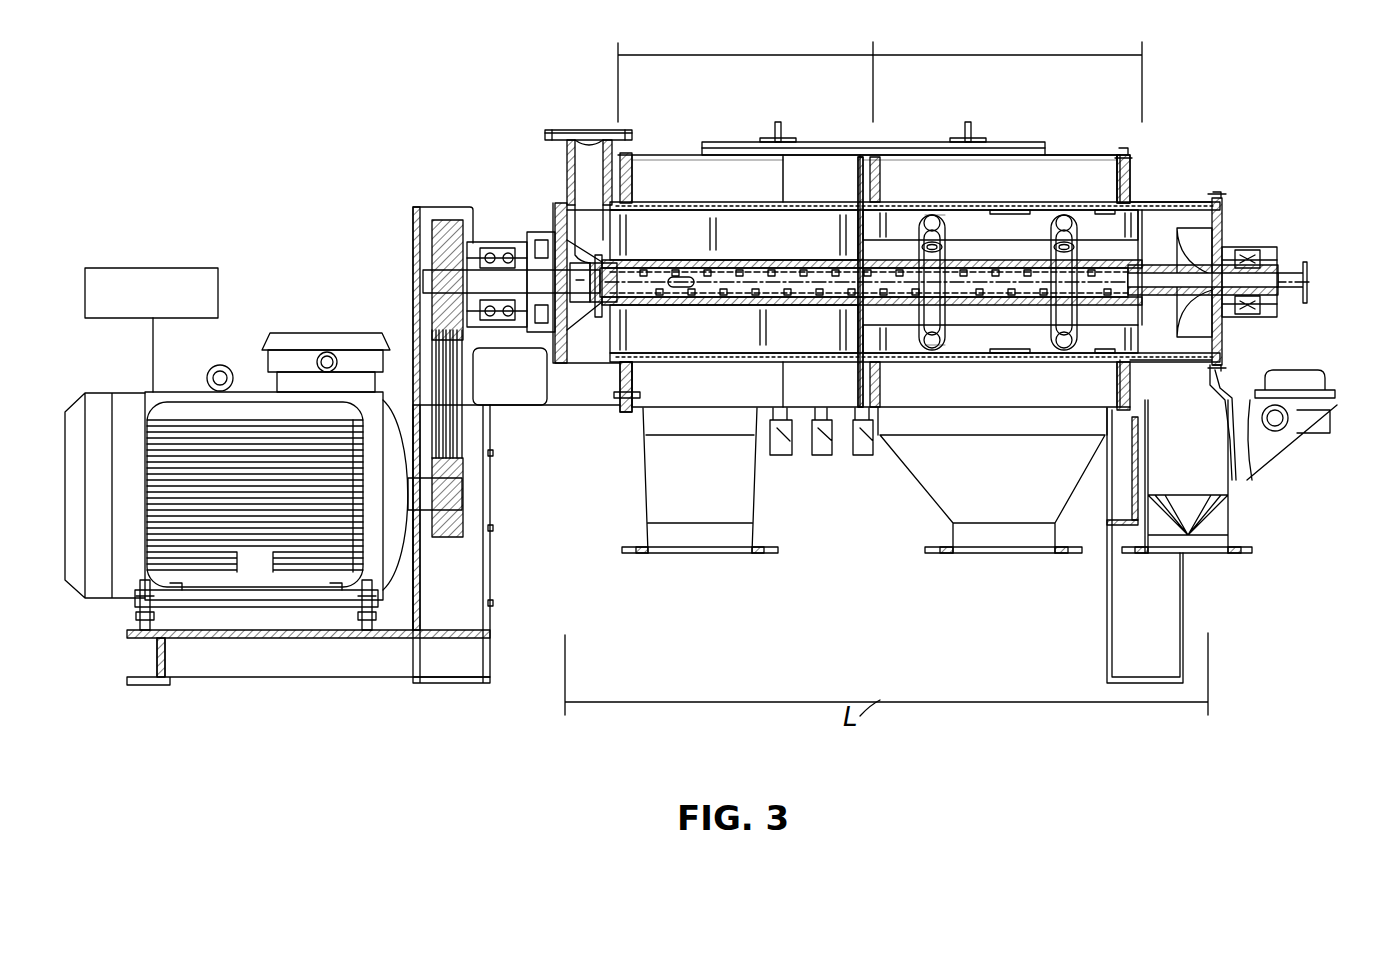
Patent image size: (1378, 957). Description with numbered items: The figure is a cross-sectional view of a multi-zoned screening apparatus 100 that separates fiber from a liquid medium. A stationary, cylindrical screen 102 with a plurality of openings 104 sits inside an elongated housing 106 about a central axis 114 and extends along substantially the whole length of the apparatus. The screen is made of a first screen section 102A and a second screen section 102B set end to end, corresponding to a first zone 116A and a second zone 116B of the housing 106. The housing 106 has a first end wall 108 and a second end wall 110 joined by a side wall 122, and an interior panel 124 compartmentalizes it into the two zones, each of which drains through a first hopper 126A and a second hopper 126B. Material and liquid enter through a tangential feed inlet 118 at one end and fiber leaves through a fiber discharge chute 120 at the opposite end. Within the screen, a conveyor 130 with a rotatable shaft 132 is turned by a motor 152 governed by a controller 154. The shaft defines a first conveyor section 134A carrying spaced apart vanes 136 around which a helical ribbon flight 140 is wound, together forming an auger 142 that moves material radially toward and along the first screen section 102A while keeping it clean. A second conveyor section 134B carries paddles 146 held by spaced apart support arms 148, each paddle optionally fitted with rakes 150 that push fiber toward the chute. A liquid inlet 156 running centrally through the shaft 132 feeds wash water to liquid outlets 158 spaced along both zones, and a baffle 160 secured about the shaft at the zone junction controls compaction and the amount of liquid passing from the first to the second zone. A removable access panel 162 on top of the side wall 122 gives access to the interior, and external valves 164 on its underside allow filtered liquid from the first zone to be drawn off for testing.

The apparatus 100 is at (340, 105).
The screen 102 is at (1079, 193).
The first screen section 102A is at (727, 205).
The second screen section 102B is at (1018, 205).
The openings 104 is at (832, 202).
The housing 106 is at (671, 146).
The first end wall 108 is at (618, 386).
The second end wall 110 is at (1130, 186).
The central axis 114 is at (1286, 275).
The first zone 116A is at (747, 55).
The second zone 116B is at (1014, 55).
The tangential feed inlet 118 is at (590, 135).
The fiber discharge chute 120 is at (1163, 550).
The side wall 122 is at (1060, 155).
The interior panel 124 is at (870, 175).
The first hopper 126A is at (704, 550).
The second hopper 126B is at (1003, 550).
The conveyor 130 is at (1152, 250).
The rotatable shaft 132 is at (686, 300).
The first conveyor section 134A is at (673, 262).
The second conveyor section 134B is at (920, 302).
The vanes 136 is at (772, 244).
The ribbon flight 140 is at (738, 362).
The auger 142 is at (694, 367).
The paddles 146 is at (956, 214).
The support arms 148 is at (1052, 255).
The rakes 150 is at (1032, 358).
The motor 152 is at (186, 392).
The controller 154 is at (118, 268).
The liquid inlet 156 is at (1310, 283).
The liquid outlets 158 is at (766, 298).
The baffle 160 is at (852, 234).
The removable access panel 162 is at (838, 142).
The external valves 164 is at (780, 457).